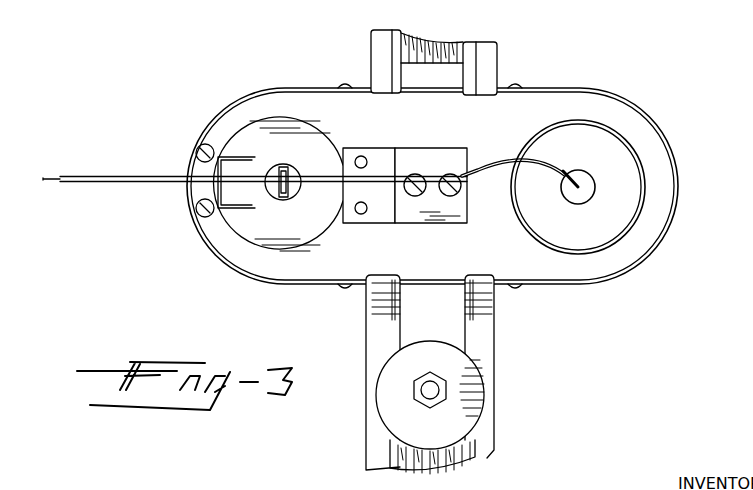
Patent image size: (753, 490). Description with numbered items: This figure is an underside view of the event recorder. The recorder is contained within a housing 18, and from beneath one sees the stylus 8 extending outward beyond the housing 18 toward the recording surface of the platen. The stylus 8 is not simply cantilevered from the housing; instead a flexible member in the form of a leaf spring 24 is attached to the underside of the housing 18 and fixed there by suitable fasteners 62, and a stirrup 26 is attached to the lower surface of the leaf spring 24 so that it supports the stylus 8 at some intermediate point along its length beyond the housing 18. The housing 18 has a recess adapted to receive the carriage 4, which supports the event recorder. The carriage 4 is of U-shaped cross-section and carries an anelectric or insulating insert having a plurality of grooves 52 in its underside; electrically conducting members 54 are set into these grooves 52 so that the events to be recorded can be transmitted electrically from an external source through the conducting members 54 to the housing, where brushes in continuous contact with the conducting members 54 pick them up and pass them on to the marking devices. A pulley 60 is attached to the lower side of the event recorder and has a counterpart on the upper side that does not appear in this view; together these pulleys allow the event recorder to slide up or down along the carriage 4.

The carriage 4 is at (428, 246).
The stylus 8 is at (85, 175).
The housing 18 is at (620, 90).
The leaf spring 24 is at (380, 158).
The stirrup 26 is at (247, 155).
The grooves 52 is at (455, 42).
The electrically conducting members 54 is at (405, 65).
The pulley 60 is at (478, 392).
The fasteners 62 is at (470, 155).